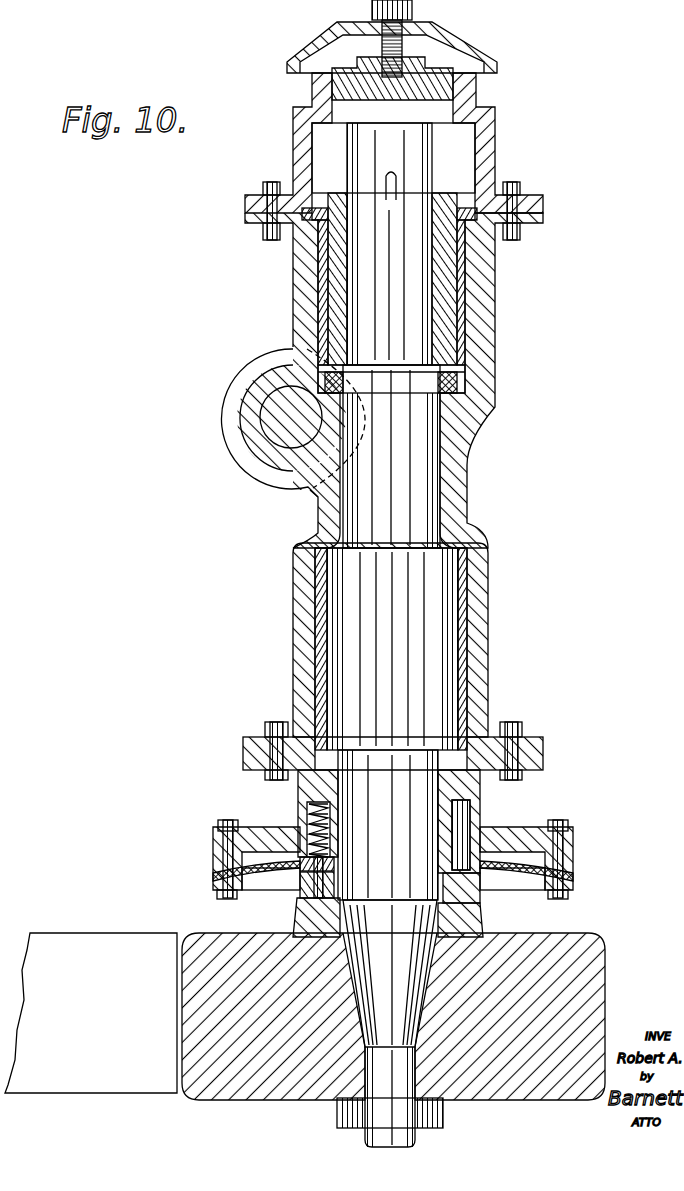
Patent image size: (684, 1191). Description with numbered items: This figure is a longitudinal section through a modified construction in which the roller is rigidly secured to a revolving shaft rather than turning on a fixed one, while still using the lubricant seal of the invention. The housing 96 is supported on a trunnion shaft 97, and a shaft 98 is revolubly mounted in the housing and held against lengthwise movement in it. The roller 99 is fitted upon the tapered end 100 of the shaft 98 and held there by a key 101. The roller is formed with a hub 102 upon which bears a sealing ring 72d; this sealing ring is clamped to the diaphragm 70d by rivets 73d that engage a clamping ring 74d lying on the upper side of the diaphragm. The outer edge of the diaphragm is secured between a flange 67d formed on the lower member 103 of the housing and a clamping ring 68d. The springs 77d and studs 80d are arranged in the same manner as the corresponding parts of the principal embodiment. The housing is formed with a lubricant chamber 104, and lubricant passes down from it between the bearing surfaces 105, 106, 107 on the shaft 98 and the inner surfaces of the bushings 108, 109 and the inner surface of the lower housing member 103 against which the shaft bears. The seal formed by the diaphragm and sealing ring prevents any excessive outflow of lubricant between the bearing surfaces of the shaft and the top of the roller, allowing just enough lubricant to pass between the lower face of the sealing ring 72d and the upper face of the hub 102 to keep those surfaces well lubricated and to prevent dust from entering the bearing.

The housing 96 is at (477, 363).
The trunnion shaft 97 is at (277, 410).
The shaft 98 is at (405, 420).
The roller 99 is at (580, 985).
The tapered end 100 is at (410, 975).
The key 101 is at (440, 1113).
The hub 102 is at (307, 915).
The lower member of the housing 103 is at (470, 787).
The lubricant chamber 104 is at (455, 163).
The bearing surface 105 is at (437, 285).
The bearing surface 106 is at (460, 628).
The bearing surface 107 is at (440, 770).
The bushing 108 is at (462, 315).
The bushing 109 is at (467, 672).
The flange 67d is at (253, 832).
The clamping ring 68d is at (222, 885).
The diaphragm 70d is at (272, 865).
The sealing ring 72d is at (300, 883).
The rivets 73d is at (313, 863).
The clamping ring 74d is at (480, 863).
The springs 77d is at (313, 810).
The studs 80d is at (463, 820).